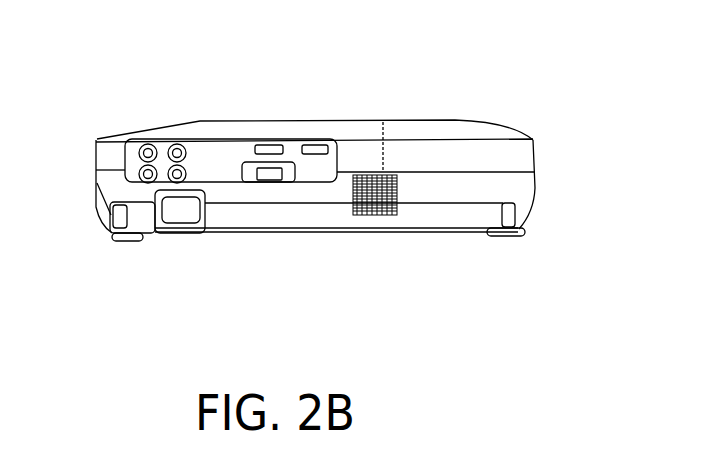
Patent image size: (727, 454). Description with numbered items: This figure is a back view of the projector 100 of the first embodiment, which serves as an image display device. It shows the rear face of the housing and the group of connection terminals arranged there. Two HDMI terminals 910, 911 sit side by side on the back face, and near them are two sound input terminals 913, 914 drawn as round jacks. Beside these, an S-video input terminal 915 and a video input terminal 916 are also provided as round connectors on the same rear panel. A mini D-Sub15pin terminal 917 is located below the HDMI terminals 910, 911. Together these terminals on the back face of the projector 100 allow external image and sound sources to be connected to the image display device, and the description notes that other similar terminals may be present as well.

The projector 100 is at (562, 108).
The HDMI terminal 910 is at (274, 145).
The HDMI terminal 911 is at (331, 145).
The sound input terminal 913 is at (123, 166).
The sound input terminal 914 is at (123, 143).
The S-video input terminal 915 is at (183, 146).
The video input terminal 916 is at (187, 165).
The mini D-Sub15pin terminal 917 is at (275, 183).